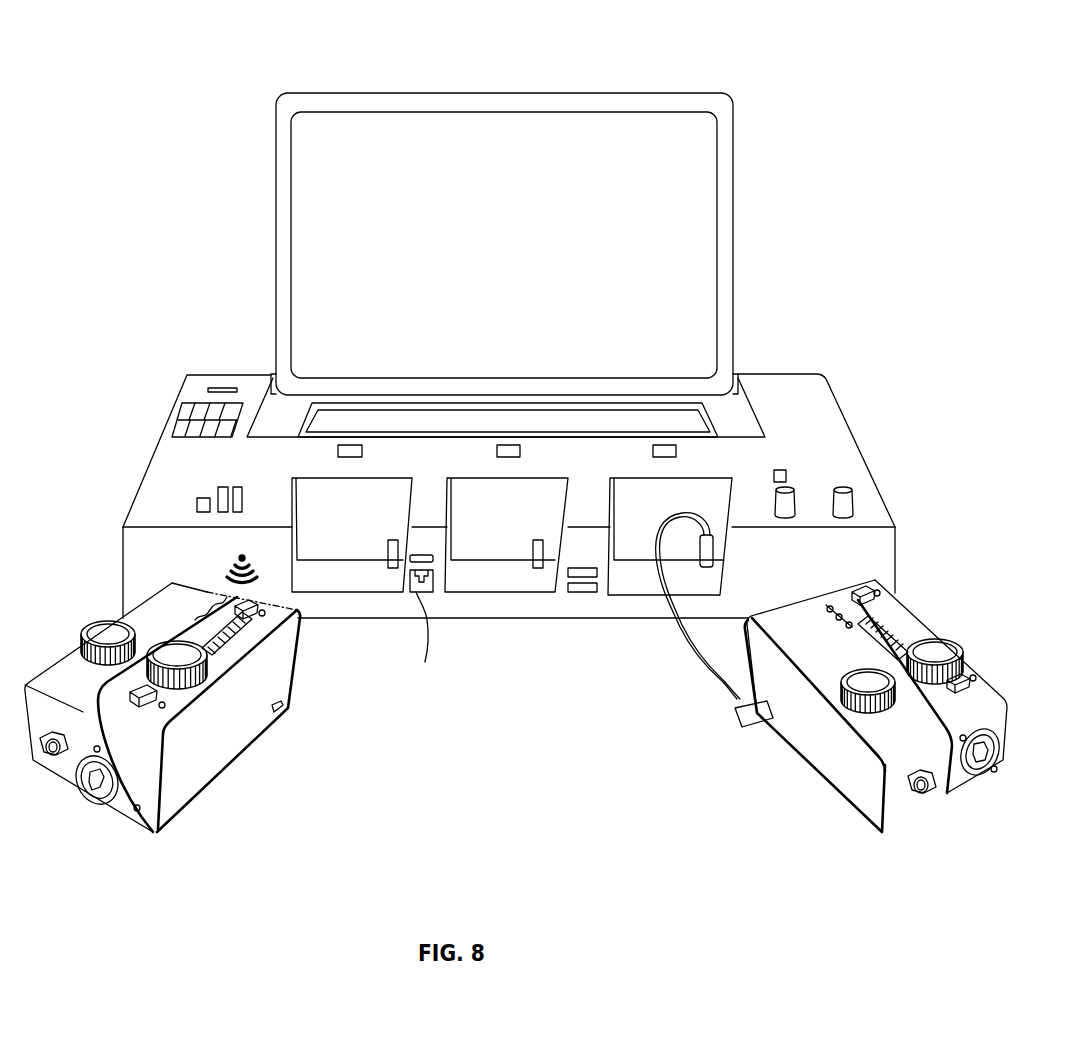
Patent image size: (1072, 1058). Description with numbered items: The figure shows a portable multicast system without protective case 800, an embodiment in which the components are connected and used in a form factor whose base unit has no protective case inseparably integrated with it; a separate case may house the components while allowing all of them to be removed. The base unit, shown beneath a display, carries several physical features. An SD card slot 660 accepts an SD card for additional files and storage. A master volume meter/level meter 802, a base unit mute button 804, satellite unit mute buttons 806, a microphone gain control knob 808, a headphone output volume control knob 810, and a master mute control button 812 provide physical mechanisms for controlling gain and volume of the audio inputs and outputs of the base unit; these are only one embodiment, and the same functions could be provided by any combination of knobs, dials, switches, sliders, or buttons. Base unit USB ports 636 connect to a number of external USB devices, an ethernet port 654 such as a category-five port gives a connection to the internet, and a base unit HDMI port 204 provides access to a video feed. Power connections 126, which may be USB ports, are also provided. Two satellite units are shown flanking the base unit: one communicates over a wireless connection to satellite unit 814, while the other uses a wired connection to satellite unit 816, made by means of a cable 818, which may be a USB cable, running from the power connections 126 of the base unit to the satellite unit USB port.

The portable multicast system without protective case 800 is at (968, 104).
The SD card slot 660 is at (208, 388).
The master volume meter/level meter 802 is at (178, 433).
The base unit mute button 804 is at (197, 503).
The base unit USB ports 636 is at (220, 513).
The wireless connection to satellite unit 814 is at (263, 578).
The base unit HDMI port 204 is at (411, 593).
The ethernet port 654 is at (422, 640).
The power connections 126 is at (535, 569).
The satellite unit mute buttons 806 is at (362, 451).
The master mute control button 812 is at (786, 470).
The headphone output volume control knob 810 is at (797, 489).
The microphone gain control knob 808 is at (844, 504).
The cable 818 is at (702, 696).
The wired connection to satellite unit 816 is at (763, 730).